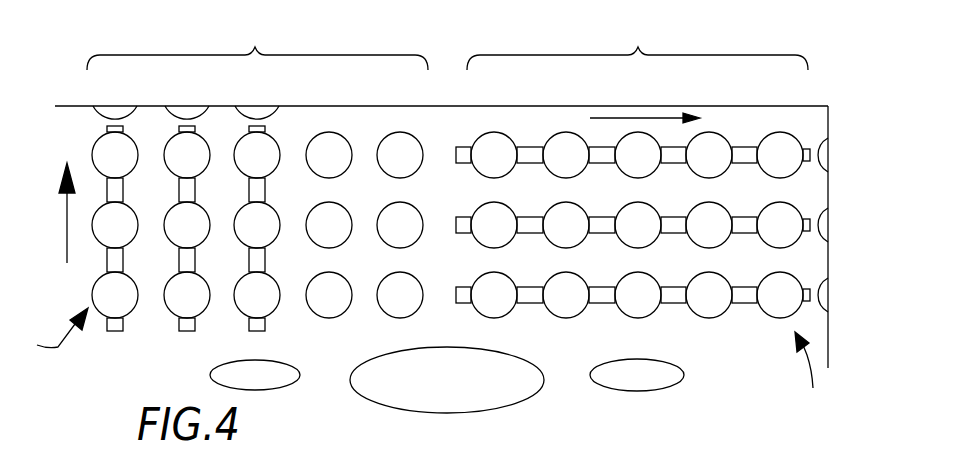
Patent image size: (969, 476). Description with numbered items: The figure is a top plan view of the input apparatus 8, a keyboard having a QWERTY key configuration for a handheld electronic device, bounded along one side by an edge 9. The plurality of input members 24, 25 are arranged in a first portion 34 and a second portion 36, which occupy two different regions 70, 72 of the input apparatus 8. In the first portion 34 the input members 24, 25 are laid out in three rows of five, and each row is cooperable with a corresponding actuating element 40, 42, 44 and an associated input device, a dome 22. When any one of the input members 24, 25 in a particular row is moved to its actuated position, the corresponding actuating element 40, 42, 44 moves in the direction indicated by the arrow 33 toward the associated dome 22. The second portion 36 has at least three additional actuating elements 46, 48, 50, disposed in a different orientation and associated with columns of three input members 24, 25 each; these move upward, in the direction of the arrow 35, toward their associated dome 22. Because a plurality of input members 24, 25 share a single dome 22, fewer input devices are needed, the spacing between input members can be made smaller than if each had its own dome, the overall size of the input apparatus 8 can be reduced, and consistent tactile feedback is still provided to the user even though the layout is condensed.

The input apparatus 8 is at (727, 413).
The edge of sheet 9 is at (828, 338).
The dome 22 is at (107, 108).
The input member 24 is at (175, 152).
The input member 25 is at (132, 225).
The arrow 33 is at (617, 117).
The first portion 34 is at (810, 376).
The arrow 35 is at (66, 214).
The second portion 36 is at (51, 335).
The actuating element 40 is at (745, 304).
The actuating element 42 is at (467, 217).
The actuating element 44 is at (527, 164).
The actuating element 46 is at (106, 328).
The actuating element 48 is at (178, 327).
The actuating element 50 is at (248, 326).
The region 70 is at (637, 45).
The region 72 is at (257, 45).